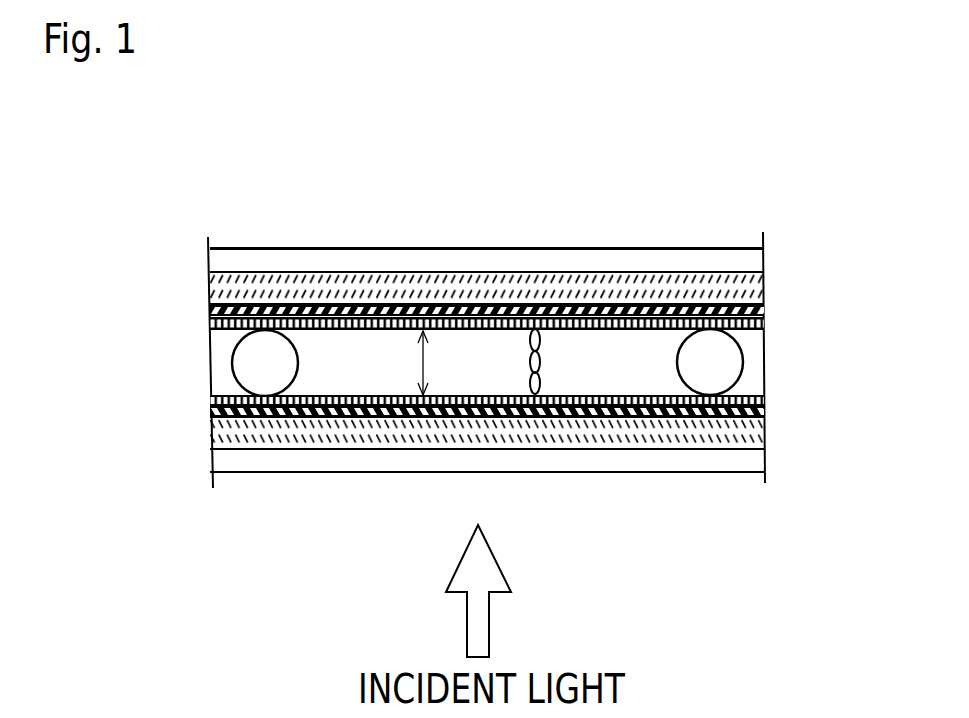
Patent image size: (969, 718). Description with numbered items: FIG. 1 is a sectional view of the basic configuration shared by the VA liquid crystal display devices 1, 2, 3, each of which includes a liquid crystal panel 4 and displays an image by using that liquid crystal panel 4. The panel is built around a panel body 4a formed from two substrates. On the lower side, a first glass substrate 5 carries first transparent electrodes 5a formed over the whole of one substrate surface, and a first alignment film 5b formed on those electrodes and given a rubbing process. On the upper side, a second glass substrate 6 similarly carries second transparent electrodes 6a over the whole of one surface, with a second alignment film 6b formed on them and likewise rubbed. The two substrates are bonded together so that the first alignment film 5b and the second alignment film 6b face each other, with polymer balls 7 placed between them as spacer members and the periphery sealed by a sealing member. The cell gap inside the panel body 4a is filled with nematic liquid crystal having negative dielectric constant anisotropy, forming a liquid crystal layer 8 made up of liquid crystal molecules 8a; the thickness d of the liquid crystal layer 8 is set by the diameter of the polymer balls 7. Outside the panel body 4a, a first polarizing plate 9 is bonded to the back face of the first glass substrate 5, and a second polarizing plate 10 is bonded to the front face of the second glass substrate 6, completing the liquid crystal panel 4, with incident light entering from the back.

The VA liquid crystal display device 1 is at (511, 283).
The VA liquid crystal display device 2 is at (511, 283).
The VA liquid crystal display device 3 is at (420, 91).
The liquid crystal panel 4 is at (468, 247).
The panel body 4a is at (190, 273).
The first glass substrate 5 is at (764, 435).
The first transparent electrode 5a is at (764, 412).
The first alignment film 5b is at (764, 400).
The second glass substrate 6 is at (757, 280).
The second transparent electrode 6a is at (757, 308).
The second alignment film 6b is at (757, 318).
The polymer ball 7 is at (292, 363).
The liquid crystal layer 8 is at (757, 363).
The liquid crystal molecule 8a is at (543, 363).
The first polarizing plate 9 is at (764, 462).
The second polarizing plate 10 is at (755, 260).